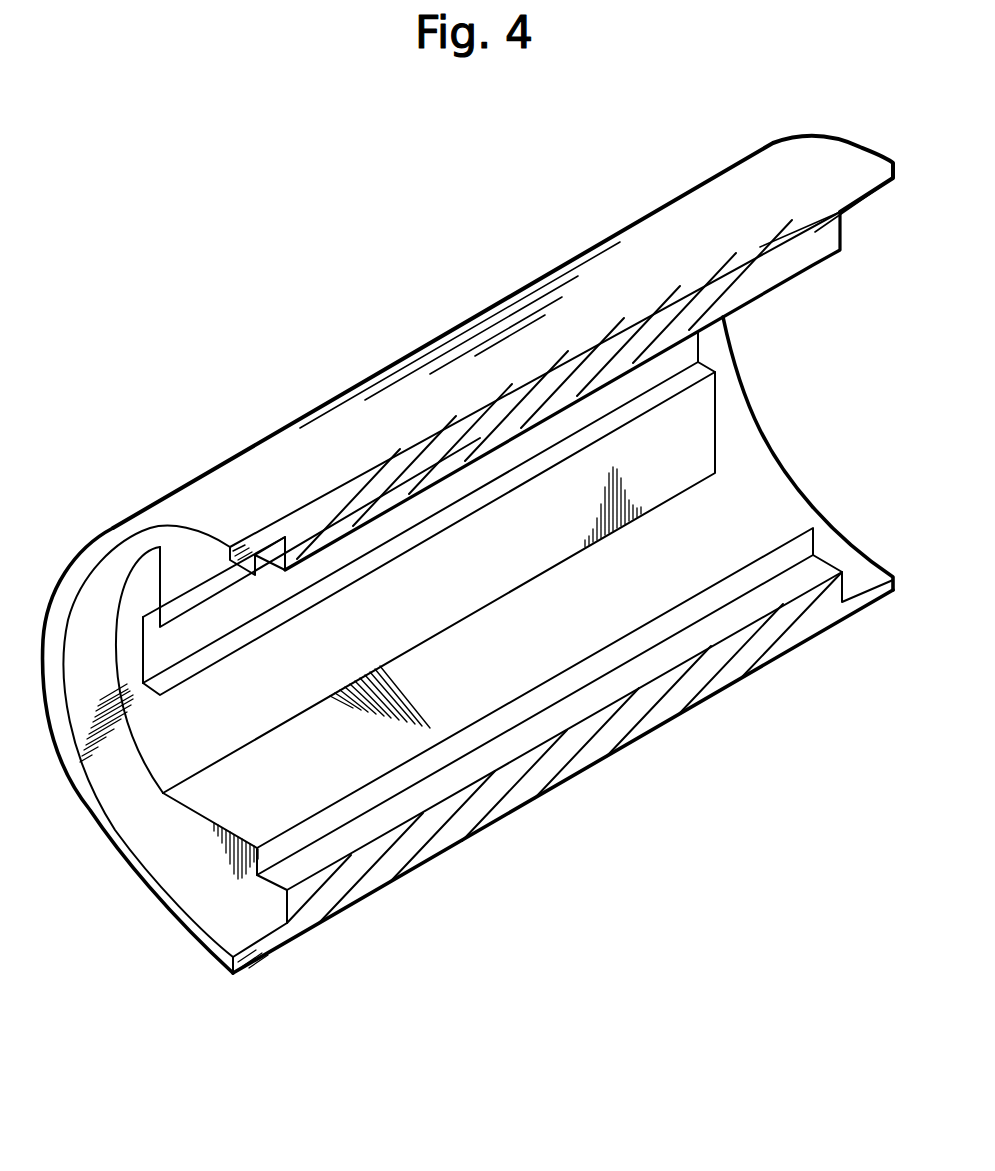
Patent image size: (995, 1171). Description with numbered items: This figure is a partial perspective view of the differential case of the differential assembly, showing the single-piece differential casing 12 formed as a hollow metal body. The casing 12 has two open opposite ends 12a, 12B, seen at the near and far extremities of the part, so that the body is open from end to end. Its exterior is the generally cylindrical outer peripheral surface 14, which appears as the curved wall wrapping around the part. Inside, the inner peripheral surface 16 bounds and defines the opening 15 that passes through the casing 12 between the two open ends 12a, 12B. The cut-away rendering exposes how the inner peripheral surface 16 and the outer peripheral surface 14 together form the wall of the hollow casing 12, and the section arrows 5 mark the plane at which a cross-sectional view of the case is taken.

The differential casing 12 is at (430, 342).
The open end 12a is at (283, 945).
The open end 12B is at (830, 628).
The outer peripheral surface 14 is at (213, 490).
The opening 15 is at (673, 433).
The inner peripheral surface 16 is at (733, 533).
The section line for FIG. 5 is at (275, 365).